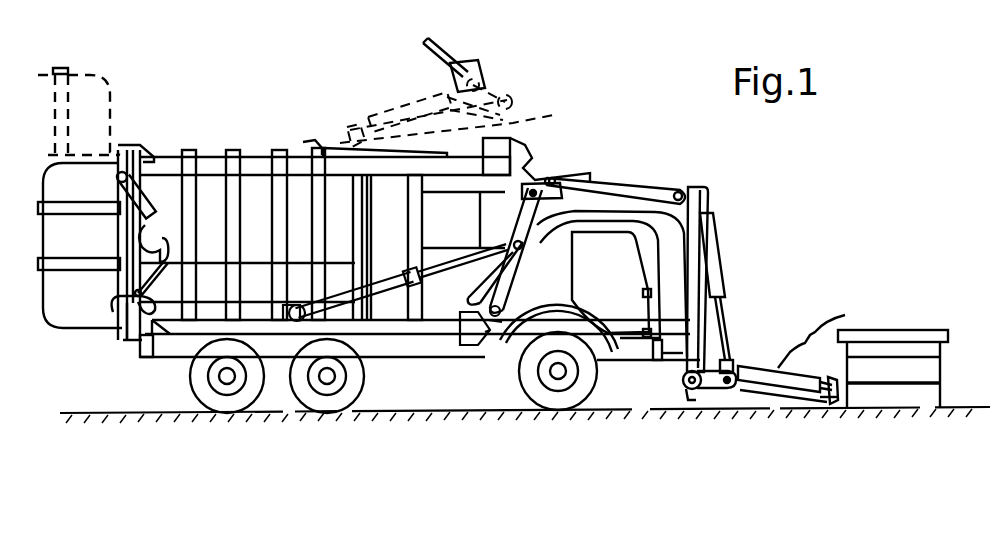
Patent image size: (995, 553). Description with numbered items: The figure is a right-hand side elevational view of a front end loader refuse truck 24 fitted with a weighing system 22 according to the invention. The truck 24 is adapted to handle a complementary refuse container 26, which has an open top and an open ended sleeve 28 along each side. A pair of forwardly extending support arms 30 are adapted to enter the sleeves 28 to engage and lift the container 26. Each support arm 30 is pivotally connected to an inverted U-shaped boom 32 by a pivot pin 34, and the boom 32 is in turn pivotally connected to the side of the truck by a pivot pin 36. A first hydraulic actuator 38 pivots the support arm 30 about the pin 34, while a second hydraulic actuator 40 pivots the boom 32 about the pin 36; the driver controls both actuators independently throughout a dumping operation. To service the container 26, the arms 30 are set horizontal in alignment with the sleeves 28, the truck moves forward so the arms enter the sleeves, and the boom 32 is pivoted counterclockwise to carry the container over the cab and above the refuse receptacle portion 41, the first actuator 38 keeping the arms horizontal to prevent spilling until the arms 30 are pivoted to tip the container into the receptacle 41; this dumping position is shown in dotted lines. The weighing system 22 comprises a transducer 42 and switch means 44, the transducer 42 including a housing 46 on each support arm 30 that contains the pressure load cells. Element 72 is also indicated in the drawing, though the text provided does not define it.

The weighing system 22 is at (830, 282).
The front end loader refuse truck 24 is at (592, 162).
The refuse container 26 is at (922, 328).
The sleeve 28 is at (886, 367).
The support arm 30 is at (452, 62).
The boom 32 is at (640, 206).
The pivot pin 34 is at (688, 392).
The pivot pin 36 is at (522, 296).
The first hydraulic actuator 38 is at (724, 270).
The second hydraulic actuator 40 is at (386, 286).
The refuse receptacle portion 41 is at (258, 150).
The transducer 42 is at (748, 396).
The switch means 44 is at (480, 343).
The housing 46 is at (800, 398).
The pivot pin 72 is at (494, 328).